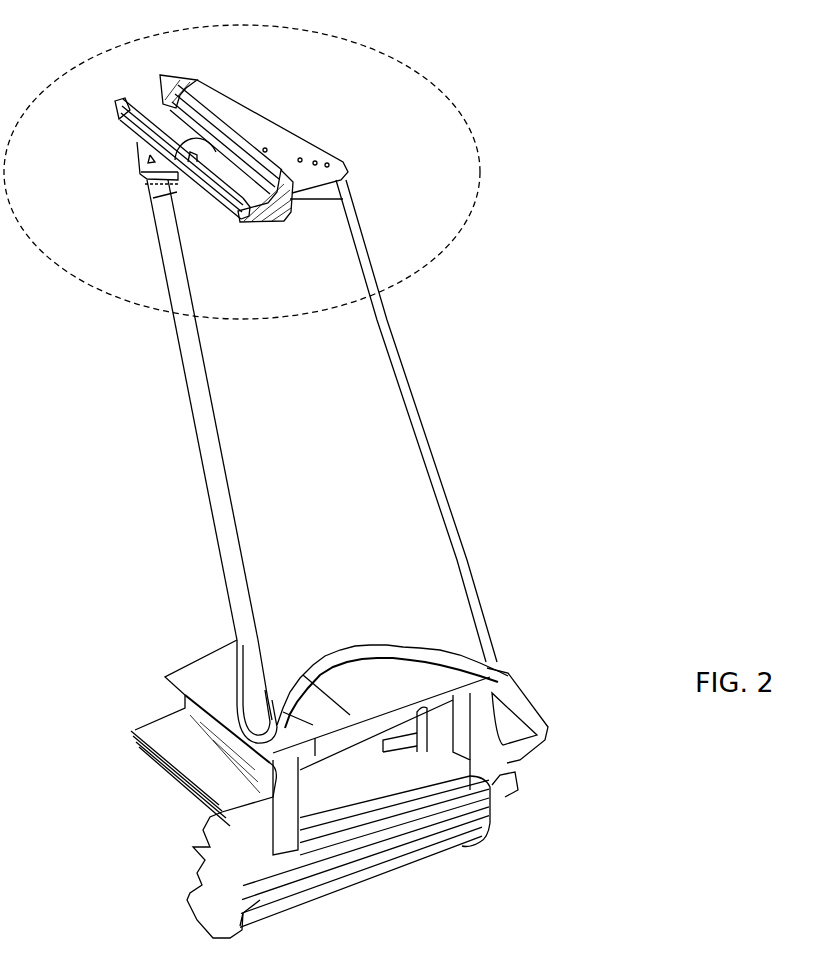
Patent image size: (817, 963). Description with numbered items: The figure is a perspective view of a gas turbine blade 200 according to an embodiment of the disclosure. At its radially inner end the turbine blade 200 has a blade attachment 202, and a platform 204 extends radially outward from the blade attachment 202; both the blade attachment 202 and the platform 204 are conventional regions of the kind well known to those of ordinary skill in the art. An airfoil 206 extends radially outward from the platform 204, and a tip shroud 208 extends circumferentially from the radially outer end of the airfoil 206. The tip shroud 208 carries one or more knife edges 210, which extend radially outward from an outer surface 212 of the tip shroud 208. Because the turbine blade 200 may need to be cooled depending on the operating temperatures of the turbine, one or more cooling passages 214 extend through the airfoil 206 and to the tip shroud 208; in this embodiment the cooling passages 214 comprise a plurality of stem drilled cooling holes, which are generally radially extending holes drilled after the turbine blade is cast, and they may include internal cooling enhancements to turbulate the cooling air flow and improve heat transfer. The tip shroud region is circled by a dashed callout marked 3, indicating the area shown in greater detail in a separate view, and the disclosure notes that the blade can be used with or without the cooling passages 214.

The turbine blade 200 is at (603, 391).
The blade attachment 202 is at (491, 836).
The platform 204 is at (210, 673).
The airfoil 206 is at (331, 440).
The tip shroud 208 is at (254, 137).
The knife edges 210 is at (203, 95).
The outer surface 212 is at (250, 194).
The cooling passages 214 is at (288, 152).
The detail view callout of FIG. 3 is at (458, 108).